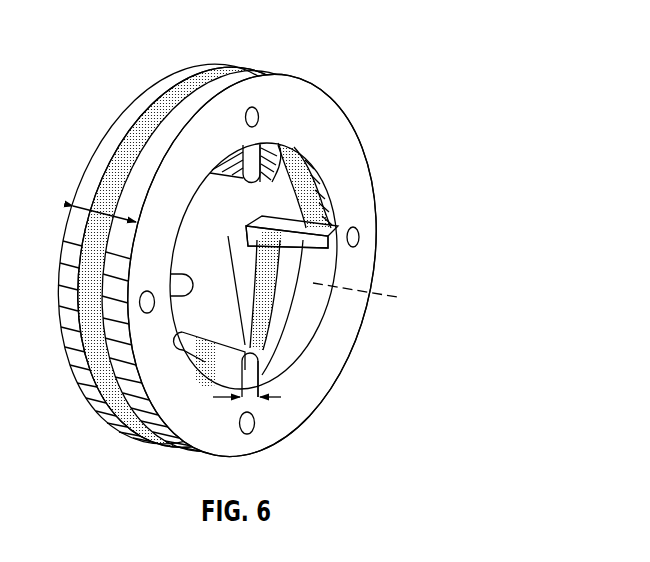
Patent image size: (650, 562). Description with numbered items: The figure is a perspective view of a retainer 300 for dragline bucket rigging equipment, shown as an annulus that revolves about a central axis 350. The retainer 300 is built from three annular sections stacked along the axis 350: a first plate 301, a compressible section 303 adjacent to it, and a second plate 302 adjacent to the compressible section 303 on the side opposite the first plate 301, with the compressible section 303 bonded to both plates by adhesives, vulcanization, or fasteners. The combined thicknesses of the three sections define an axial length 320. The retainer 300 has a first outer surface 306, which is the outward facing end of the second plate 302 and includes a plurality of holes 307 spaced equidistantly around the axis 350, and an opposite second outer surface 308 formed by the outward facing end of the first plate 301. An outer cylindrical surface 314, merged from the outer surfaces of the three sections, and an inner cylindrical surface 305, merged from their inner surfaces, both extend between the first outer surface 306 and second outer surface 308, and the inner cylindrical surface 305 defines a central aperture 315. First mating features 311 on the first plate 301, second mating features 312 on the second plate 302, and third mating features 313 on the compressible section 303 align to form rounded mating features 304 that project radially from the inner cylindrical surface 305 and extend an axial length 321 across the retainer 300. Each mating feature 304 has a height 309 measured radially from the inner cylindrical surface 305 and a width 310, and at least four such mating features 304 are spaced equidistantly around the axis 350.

The retainer 300 is at (147, 62).
The first plate 301 is at (73, 198).
The second plate 302 is at (252, 80).
The compressible section 303 is at (124, 155).
The mating features 304 is at (227, 190).
The inner cylindrical surface 305 is at (320, 330).
The first outer surface 306 is at (337, 355).
The holes 307 is at (259, 117).
The second outer surface 308 is at (121, 111).
The height 309 is at (262, 380).
The width 310 is at (271, 399).
The first mating features 311 is at (318, 175).
The second mating features 312 is at (330, 242).
The third mating features 313 is at (325, 198).
The outer cylindrical surface 314 is at (220, 63).
The central aperture 315 is at (305, 160).
The axial length 320 is at (89, 229).
The axial length 321 is at (340, 308).
The axis 350 is at (354, 296).